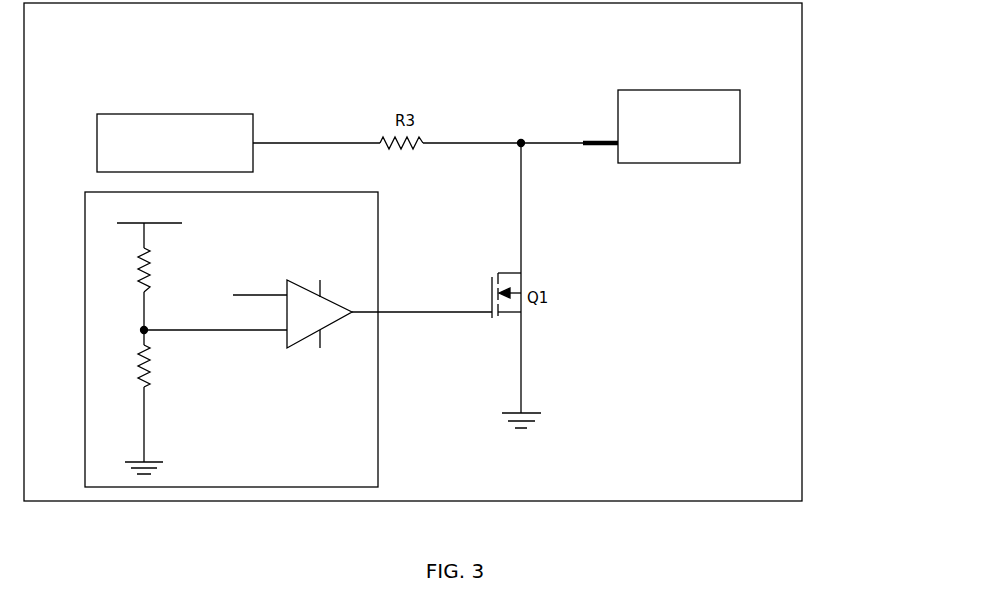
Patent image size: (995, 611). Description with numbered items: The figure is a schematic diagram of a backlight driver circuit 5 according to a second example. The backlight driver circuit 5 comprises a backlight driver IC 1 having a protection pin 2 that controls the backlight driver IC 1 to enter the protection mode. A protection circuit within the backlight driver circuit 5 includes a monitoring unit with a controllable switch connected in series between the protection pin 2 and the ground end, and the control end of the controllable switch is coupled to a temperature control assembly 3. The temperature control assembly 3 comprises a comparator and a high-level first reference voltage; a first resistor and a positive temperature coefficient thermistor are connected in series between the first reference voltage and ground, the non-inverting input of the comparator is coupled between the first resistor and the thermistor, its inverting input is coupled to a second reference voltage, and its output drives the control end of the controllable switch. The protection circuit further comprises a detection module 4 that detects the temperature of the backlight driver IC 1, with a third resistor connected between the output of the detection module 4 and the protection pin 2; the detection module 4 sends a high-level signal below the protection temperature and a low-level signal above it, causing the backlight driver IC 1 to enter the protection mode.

The backlight driver IC 1 is at (715, 90).
The protection pin 2 is at (594, 130).
The temperature control assembly 3 is at (385, 252).
The detection module 4 is at (193, 113).
The backlight driver circuit 5 is at (803, 195).